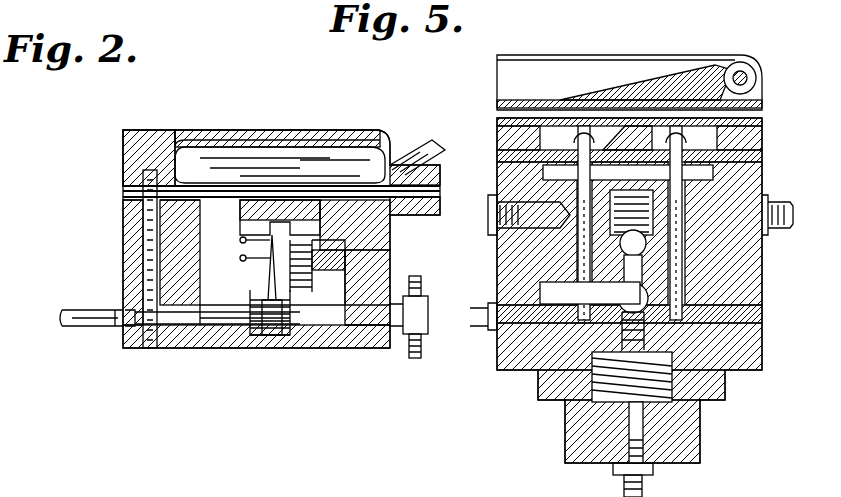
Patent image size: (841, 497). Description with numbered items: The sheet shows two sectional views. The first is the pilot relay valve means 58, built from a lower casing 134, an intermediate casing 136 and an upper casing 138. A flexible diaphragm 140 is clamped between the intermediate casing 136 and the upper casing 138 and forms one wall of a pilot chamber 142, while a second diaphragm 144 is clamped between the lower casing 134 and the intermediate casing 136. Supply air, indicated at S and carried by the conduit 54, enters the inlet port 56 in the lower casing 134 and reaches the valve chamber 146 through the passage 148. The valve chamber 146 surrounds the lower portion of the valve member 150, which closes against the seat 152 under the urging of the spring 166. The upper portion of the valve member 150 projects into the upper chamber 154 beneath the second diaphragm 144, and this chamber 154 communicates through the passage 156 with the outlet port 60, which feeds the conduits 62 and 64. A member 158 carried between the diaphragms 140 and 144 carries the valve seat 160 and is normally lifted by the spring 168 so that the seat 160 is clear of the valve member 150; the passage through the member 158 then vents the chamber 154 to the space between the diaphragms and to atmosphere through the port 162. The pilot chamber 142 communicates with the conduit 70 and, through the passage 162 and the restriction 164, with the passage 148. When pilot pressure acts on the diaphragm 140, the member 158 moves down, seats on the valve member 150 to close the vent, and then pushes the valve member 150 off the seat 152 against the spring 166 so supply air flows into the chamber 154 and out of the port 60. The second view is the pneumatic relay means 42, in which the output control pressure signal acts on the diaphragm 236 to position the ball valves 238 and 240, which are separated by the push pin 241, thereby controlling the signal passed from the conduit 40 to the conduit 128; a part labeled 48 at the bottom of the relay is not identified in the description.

In FIG. 2, the upper casing 138 is at (160, 134).
In FIG. 2, the pilot chamber 142 is at (295, 130).
In FIG. 2, the restriction 164 is at (205, 150).
In FIG. 2, the flexible diaphragm 140 is at (280, 165).
In FIG. 2, the intermediate casing 136 is at (124, 208).
In FIG. 2, the conduit 70 is at (425, 152).
In FIG. 2, the passage 162 is at (137, 262).
In FIG. 2, the second diaphragm 144 is at (150, 232).
In FIG. 2, the conduit 54 is at (92, 310).
In FIG. 2, the supply S is at (42, 314).
In FIG. 2, the inlet port 56 is at (118, 332).
In FIG. 2, the spring 168 is at (230, 285).
In FIG. 2, the member 158 is at (261, 217).
In FIG. 2, the valve seat 160 is at (238, 241).
In FIG. 2, the upper chamber 154 is at (237, 259).
In FIG. 2, the seat 152 is at (258, 350).
In FIG. 2, the valve member 150 is at (317, 266).
In FIG. 2, the valve chamber 146 is at (320, 350).
In FIG. 2, the lower casing 134 is at (280, 350).
In FIG. 2, the spring 166 is at (300, 350).
In FIG. 2, the passage 148 is at (218, 350).
In FIG. 2, the pilot relay valve means 58 is at (187, 370).
In FIG. 2, the passage 156 is at (362, 350).
In FIG. 2, the conduit 62 is at (429, 308).
In FIG. 2, the outlet port 60 is at (410, 290).
In FIG. 2, the conduit 64 is at (424, 348).
In FIG. 5, the conduit 128 is at (486, 205).
In FIG. 5, the conduit 40 is at (778, 240).
In FIG. 5, the ball valve 240 is at (660, 225).
In FIG. 5, the ball valve 238 is at (620, 300).
In FIG. 5, the push pin 241 is at (598, 270).
In FIG. 5, the diaphragm 236 is at (535, 380).
In FIG. 5, the pneumatic relay means 42 is at (560, 418).
In FIG. 5, the adjusting nut 48 is at (620, 490).